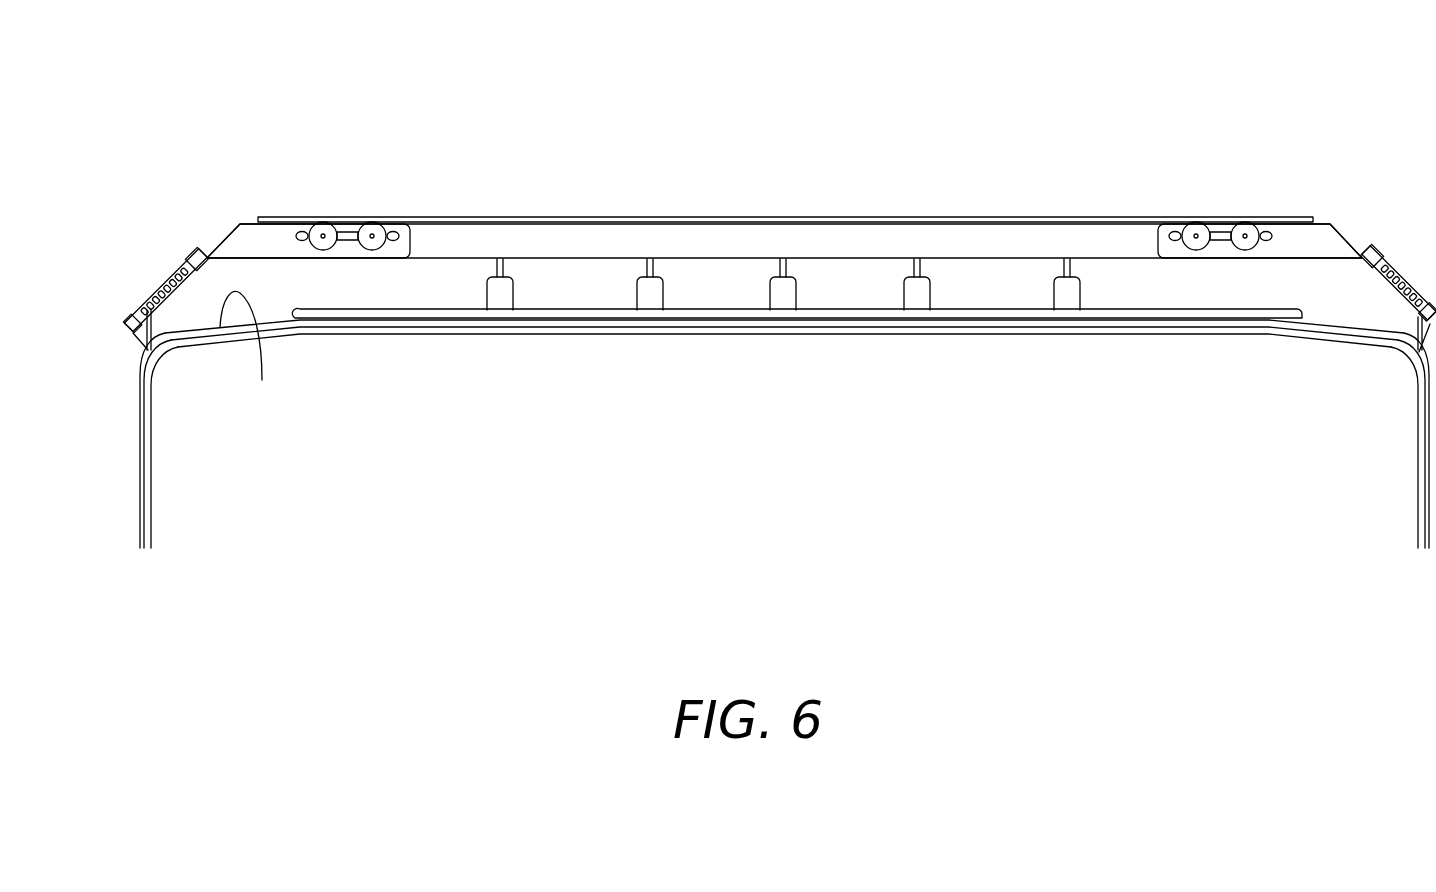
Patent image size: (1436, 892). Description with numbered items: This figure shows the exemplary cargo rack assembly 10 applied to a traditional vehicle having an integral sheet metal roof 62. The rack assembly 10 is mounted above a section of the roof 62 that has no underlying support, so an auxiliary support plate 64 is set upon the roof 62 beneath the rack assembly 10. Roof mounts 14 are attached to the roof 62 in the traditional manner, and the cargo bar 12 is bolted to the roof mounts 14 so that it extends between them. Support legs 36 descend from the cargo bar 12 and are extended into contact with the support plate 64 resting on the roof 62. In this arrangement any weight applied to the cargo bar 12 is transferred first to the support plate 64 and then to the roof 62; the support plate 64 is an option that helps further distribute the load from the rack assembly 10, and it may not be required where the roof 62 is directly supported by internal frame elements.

The rack assembly 10 is at (1178, 90).
The cargo bar 12 is at (879, 227).
The roof mounts 14 is at (237, 236).
The support legs 36 is at (783, 298).
The sheet metal roof 62 is at (248, 351).
The support plate 64 is at (562, 318).